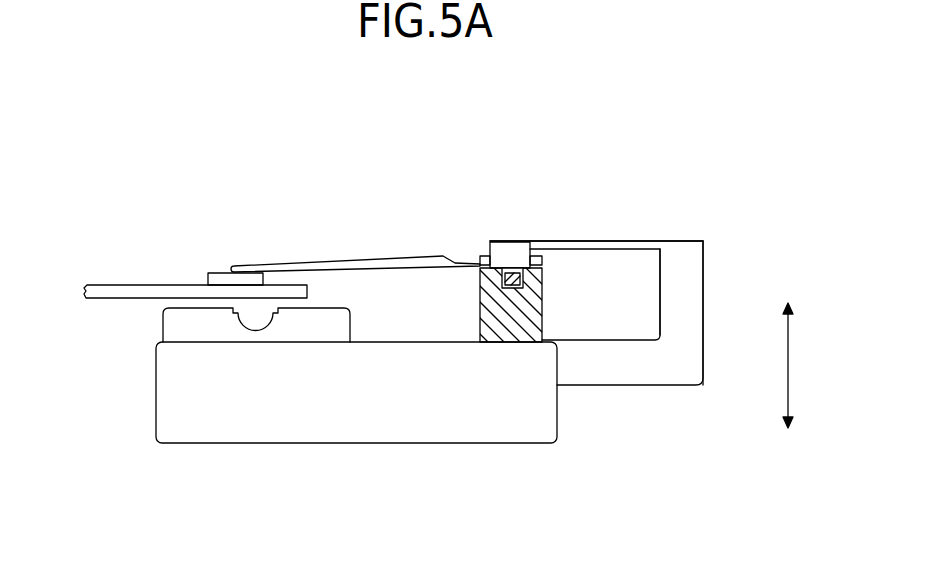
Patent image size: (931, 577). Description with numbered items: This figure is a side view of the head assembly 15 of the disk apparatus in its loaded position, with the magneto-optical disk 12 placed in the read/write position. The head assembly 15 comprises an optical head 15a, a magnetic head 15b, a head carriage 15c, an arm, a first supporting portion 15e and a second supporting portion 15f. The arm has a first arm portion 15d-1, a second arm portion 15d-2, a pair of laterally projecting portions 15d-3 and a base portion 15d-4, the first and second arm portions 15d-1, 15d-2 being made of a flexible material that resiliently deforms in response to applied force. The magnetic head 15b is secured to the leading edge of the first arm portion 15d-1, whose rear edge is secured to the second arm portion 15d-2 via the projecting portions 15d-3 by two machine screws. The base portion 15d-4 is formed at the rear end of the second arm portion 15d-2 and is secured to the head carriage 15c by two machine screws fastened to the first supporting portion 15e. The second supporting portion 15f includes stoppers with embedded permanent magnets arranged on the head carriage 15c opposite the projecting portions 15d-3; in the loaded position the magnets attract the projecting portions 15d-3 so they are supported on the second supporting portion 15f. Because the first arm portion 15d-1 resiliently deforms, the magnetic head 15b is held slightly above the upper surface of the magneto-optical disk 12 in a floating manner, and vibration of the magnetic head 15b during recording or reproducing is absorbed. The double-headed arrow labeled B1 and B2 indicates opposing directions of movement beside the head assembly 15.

The magneto-optical disk 12 is at (123, 288).
The head assembly 15 is at (427, 346).
The optical head 15a is at (172, 328).
The magnetic head 15b is at (222, 277).
The head carriage 15c is at (510, 422).
The first arm portion 15d-1 is at (360, 258).
The second arm portion 15d-2 is at (587, 238).
The projecting portions 15d-3 is at (512, 255).
The base portion 15d-4 is at (680, 238).
The first supporting portion 15e is at (683, 268).
The second supporting portion 15f is at (530, 307).
The direction B1 is at (787, 344).
The direction B2 is at (787, 442).